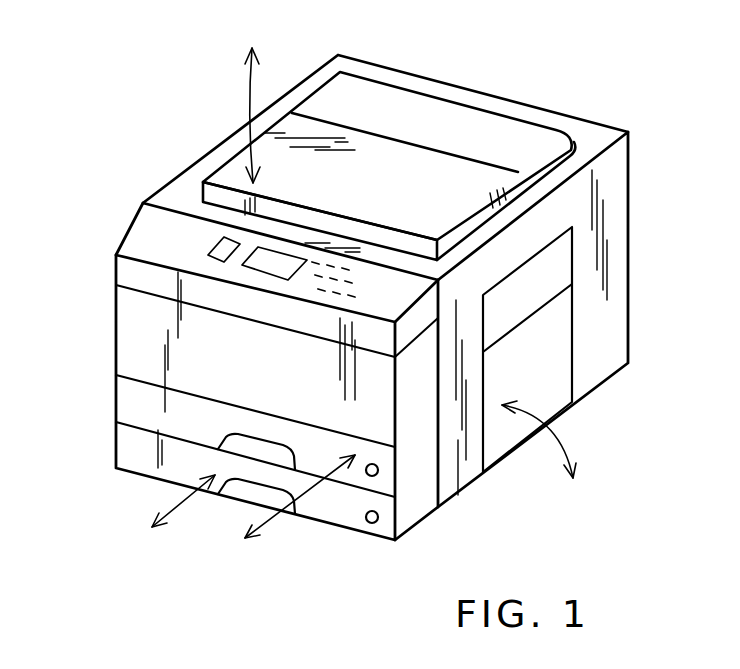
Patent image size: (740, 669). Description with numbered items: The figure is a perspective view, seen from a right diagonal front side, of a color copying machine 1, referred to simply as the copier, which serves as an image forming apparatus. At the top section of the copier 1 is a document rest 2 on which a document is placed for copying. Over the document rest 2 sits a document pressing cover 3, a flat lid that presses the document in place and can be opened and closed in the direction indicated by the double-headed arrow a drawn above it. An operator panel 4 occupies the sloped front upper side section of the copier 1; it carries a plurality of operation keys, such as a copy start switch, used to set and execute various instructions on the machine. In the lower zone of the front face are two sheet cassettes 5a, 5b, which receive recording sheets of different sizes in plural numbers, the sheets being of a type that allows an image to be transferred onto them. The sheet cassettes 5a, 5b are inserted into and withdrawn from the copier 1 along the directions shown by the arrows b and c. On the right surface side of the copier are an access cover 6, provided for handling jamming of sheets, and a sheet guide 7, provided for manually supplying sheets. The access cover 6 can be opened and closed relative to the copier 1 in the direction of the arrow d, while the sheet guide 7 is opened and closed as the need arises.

The color copying machine 1 is at (550, 84).
The document rest 2 is at (203, 158).
The document pressing cover 3 is at (381, 185).
The operator panel 4 is at (143, 228).
The sheet cassette 5a is at (122, 397).
The sheet cassette 5b is at (122, 455).
The access cover 6 is at (565, 353).
The sheet guide 7 is at (562, 277).
The arrow a is at (249, 96).
The arrow b is at (273, 520).
The arrow c is at (189, 498).
The arrow d is at (558, 441).